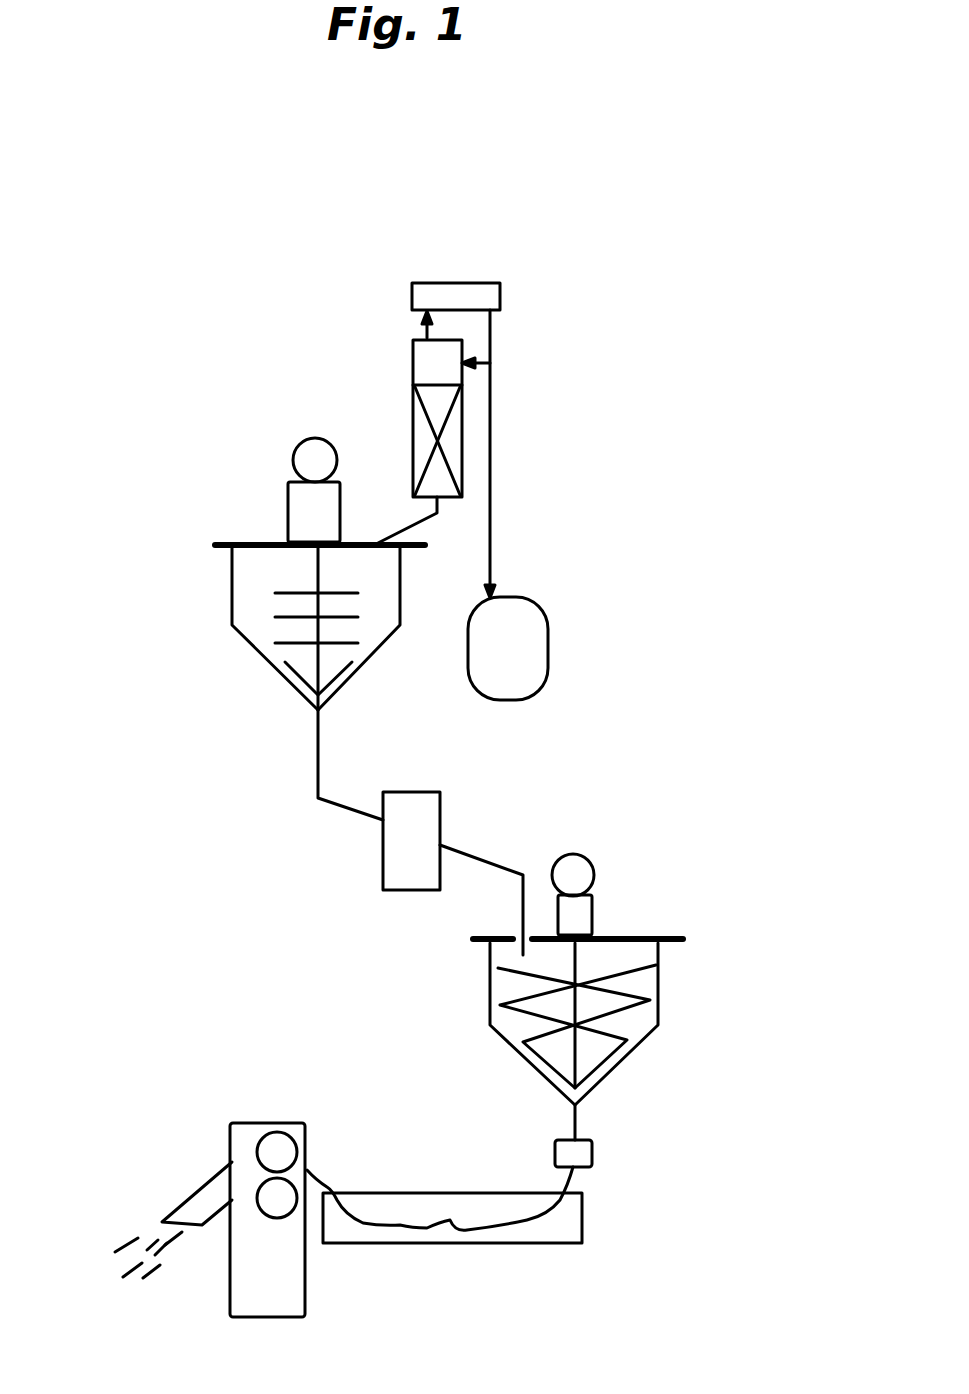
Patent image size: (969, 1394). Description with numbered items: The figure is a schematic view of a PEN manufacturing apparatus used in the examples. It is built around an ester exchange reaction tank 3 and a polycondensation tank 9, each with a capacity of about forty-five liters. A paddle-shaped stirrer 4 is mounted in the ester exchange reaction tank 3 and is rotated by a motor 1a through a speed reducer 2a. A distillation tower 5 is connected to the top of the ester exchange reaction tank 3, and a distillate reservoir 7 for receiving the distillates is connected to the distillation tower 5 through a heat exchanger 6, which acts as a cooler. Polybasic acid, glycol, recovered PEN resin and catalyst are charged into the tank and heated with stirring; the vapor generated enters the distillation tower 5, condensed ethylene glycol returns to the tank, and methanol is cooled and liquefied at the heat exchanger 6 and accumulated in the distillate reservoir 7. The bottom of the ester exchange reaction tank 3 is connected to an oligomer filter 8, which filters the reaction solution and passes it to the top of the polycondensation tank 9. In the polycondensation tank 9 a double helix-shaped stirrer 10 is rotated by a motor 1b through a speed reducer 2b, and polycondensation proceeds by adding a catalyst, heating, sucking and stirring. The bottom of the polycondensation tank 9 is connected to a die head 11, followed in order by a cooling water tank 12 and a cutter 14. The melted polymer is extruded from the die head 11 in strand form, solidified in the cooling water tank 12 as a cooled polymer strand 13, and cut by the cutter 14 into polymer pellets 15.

The motor 1a is at (300, 443).
The motor 1b is at (590, 860).
The speed reducer 2a is at (288, 494).
The speed reducer 2b is at (593, 912).
The ester exchange reaction tank 3 is at (243, 602).
The paddle-shaped stirrer 4 is at (282, 650).
The distillation tower 5 is at (423, 368).
The heat exchanger (cooler) 6 is at (490, 283).
The distillate reservoir 7 is at (550, 670).
The oligomer filter 8 is at (442, 800).
The polycondensation tank 9 is at (660, 1025).
The double helix-shaped stirrer 10 is at (490, 1025).
The die head 11 is at (593, 1148).
The cooling water tank 12 is at (450, 1220).
The cooled polymer strand 13 is at (323, 1183).
The cutter 14 is at (270, 1136).
The polymer pellet 15 is at (123, 1243).